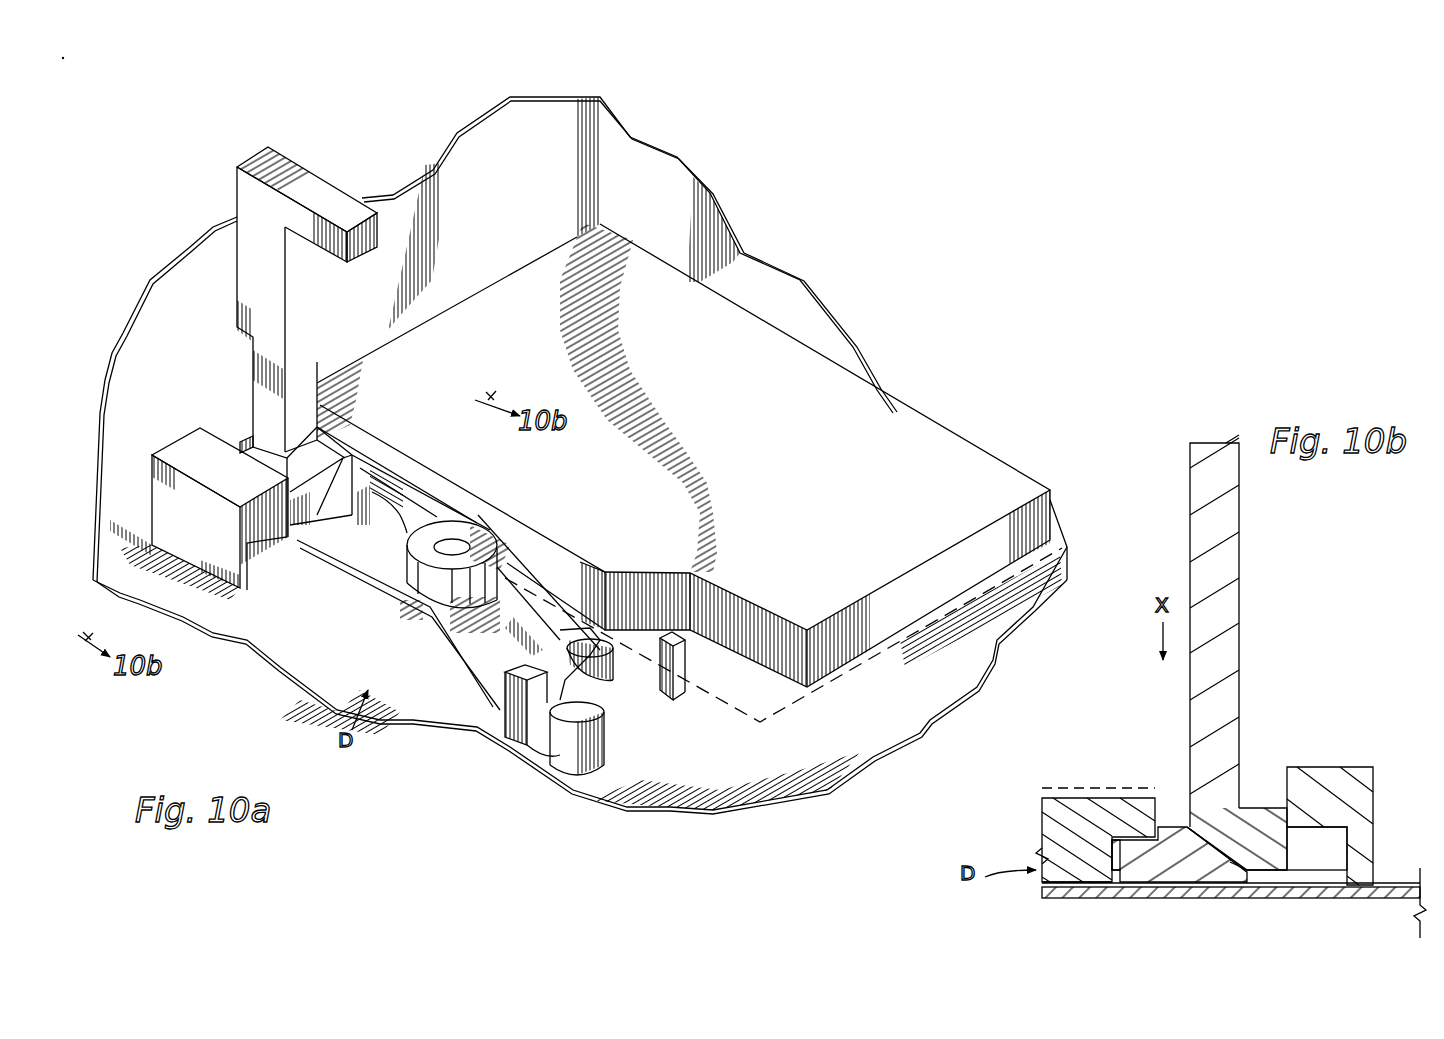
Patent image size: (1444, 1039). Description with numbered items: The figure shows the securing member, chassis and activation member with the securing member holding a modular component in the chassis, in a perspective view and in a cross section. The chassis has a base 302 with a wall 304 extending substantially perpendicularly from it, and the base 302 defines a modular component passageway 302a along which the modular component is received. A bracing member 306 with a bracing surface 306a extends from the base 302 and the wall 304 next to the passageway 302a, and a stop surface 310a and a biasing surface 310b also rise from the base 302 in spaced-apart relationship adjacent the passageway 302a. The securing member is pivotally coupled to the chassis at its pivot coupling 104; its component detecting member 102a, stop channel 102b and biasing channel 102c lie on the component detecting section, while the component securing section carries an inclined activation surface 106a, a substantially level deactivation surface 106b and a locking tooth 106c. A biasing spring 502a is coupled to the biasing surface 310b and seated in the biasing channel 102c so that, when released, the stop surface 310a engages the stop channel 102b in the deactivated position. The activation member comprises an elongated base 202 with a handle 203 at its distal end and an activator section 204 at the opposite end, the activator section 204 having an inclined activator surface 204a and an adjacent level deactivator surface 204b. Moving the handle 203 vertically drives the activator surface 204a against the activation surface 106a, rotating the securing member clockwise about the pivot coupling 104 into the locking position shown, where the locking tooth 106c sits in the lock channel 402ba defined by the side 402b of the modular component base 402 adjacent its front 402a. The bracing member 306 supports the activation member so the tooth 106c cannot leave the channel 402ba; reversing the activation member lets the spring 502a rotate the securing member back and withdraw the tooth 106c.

In FIG. 10A, the component detecting member 102a is at (618, 680).
In FIG. 10A, the stop channel 102b is at (612, 705).
In FIG. 10A, the biasing channel 102c is at (510, 690).
In FIG. 10A, the pivot coupling 104 is at (490, 540).
In FIG. 10A, the inclined activation surface 106a is at (360, 475).
In FIG. 10B, the inclined activation surface 106a is at (1218, 817).
In FIG. 10A, the deactivation surface 106b is at (432, 500).
In FIG. 10B, the deactivation surface 106b is at (1178, 830).
In FIG. 10B, the locking tooth 106c is at (1135, 865).
In FIG. 10A, the elongated base 202 is at (315, 307).
In FIG. 10B, the elongated base 202 is at (1240, 541).
In FIG. 10A, the handle 203 is at (284, 160).
In FIG. 10A, the activator section 204 is at (330, 440).
In FIG. 10B, the activator section 204 is at (1266, 807).
In FIG. 10A, the inclined activator surface 204a is at (340, 520).
In FIG. 10B, the inclined activator surface 204a is at (1228, 880).
In FIG. 10A, the deactivator surface 204b is at (290, 540).
In FIG. 10B, the deactivator surface 204b is at (1270, 880).
In FIG. 10B, the base 302 is at (1358, 900).
In FIG. 10A, the modular component passageway 302a is at (790, 688).
In FIG. 10B, the modular component passageway 302a is at (1108, 788).
In FIG. 10A, the wall 304 is at (182, 295).
In FIG. 10A, the bracing member 306 is at (186, 445).
In FIG. 10B, the bracing member 306 is at (1368, 818).
In FIG. 10A, the bracing surface 306a is at (230, 425).
In FIG. 10B, the bracing surface 306a is at (1287, 772).
In FIG. 10A, the stop surface 310a is at (688, 658).
In FIG. 10A, the biasing surface 310b is at (503, 725).
In FIG. 10A, the base 402 is at (748, 422).
In FIG. 10B, the base 402 is at (1092, 806).
In FIG. 10A, the front 402a is at (523, 266).
In FIG. 10A, the side 402b is at (565, 550).
In FIG. 10B, the lock channel 402ba is at (1090, 880).
In FIG. 10A, the biasing spring 502a is at (545, 770).